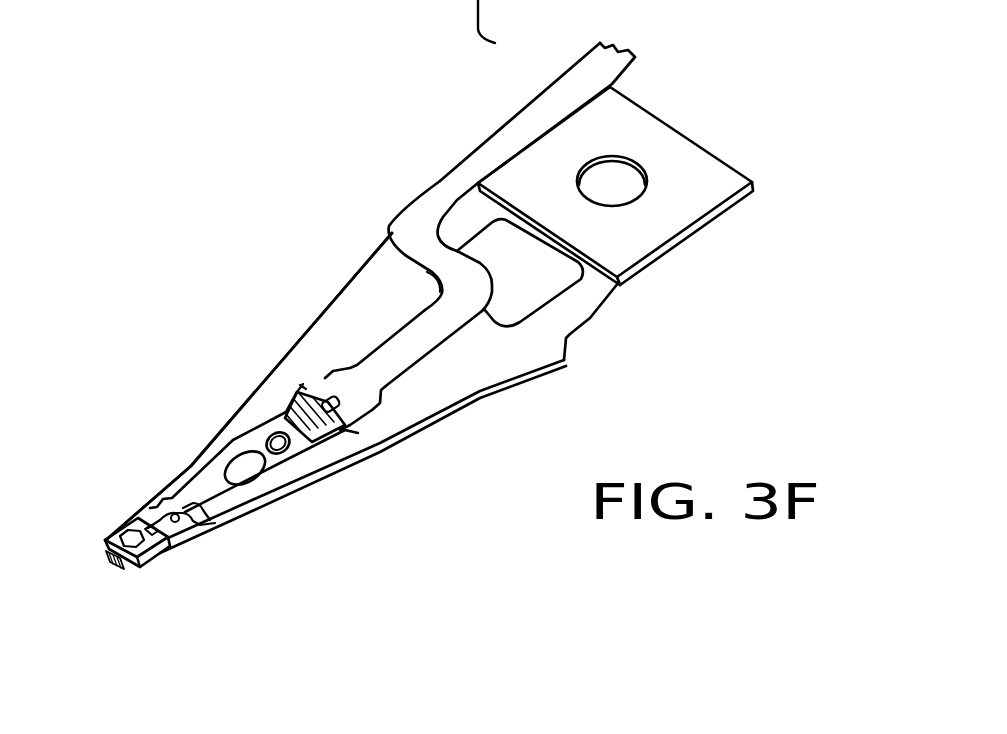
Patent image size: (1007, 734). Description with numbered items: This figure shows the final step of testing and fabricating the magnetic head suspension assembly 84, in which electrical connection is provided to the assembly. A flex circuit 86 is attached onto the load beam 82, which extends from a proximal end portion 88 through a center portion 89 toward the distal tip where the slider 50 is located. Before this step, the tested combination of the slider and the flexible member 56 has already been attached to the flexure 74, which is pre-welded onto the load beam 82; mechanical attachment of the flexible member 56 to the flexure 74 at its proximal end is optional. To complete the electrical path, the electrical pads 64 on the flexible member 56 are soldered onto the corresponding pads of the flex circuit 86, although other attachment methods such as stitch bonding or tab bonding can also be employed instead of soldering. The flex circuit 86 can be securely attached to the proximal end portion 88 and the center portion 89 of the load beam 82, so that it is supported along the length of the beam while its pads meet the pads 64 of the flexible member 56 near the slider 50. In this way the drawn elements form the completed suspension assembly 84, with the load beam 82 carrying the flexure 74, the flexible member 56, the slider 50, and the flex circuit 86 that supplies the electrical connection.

The slider 50 is at (128, 527).
The flexible member 56 is at (294, 462).
The electrical pads 64 is at (300, 403).
The flexure 74 is at (350, 427).
The load beam 82 is at (300, 337).
The suspension assembly 84 is at (122, 322).
The flex circuit 86 is at (525, 137).
The proximal end portion 88 is at (585, 80).
The center portion 89 is at (407, 347).